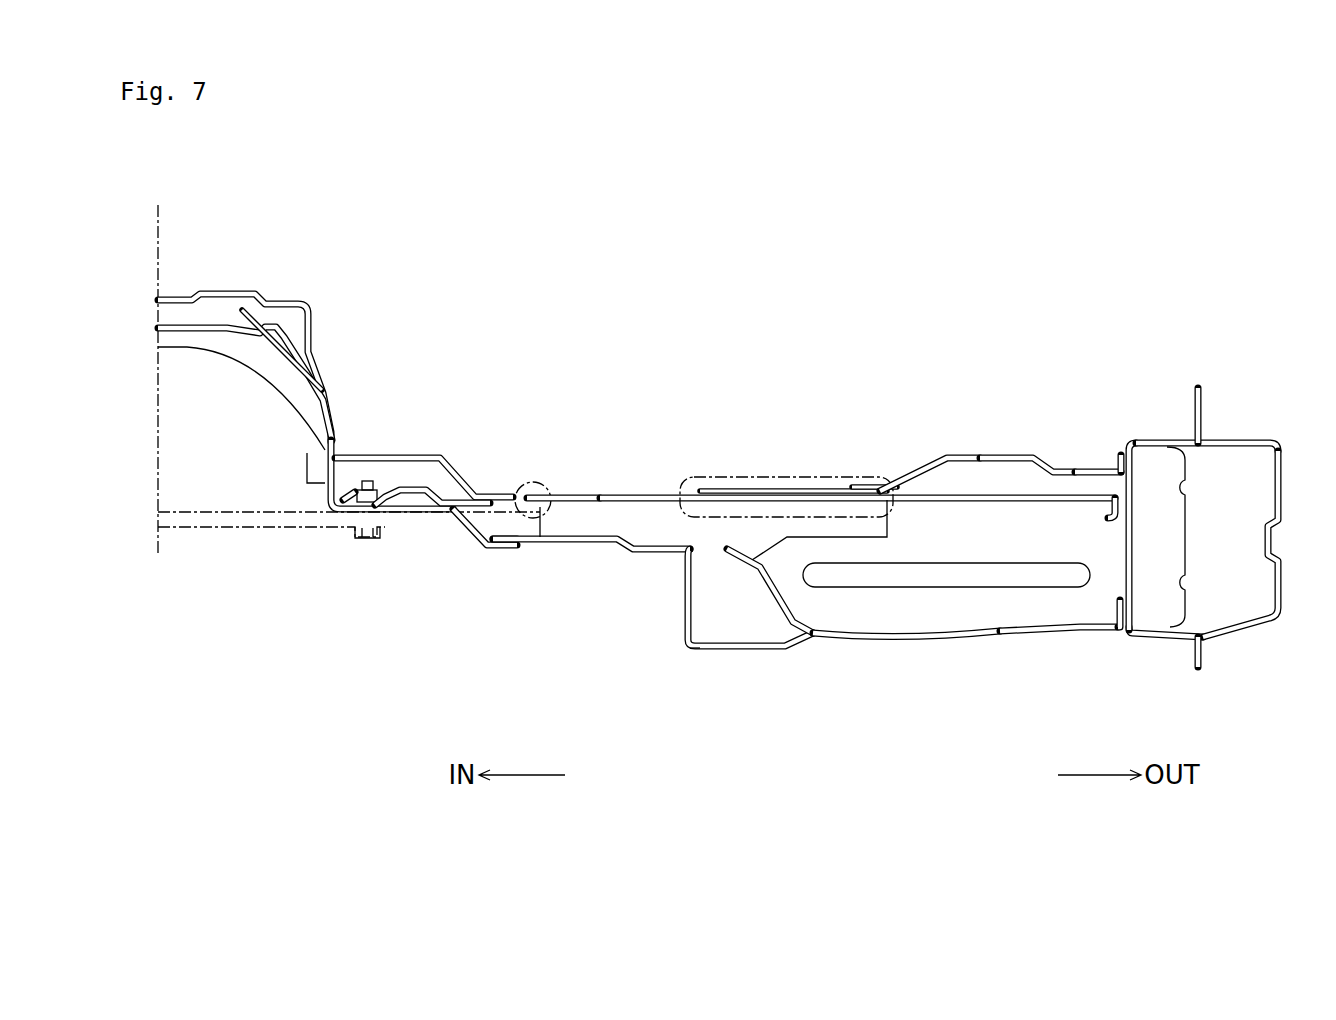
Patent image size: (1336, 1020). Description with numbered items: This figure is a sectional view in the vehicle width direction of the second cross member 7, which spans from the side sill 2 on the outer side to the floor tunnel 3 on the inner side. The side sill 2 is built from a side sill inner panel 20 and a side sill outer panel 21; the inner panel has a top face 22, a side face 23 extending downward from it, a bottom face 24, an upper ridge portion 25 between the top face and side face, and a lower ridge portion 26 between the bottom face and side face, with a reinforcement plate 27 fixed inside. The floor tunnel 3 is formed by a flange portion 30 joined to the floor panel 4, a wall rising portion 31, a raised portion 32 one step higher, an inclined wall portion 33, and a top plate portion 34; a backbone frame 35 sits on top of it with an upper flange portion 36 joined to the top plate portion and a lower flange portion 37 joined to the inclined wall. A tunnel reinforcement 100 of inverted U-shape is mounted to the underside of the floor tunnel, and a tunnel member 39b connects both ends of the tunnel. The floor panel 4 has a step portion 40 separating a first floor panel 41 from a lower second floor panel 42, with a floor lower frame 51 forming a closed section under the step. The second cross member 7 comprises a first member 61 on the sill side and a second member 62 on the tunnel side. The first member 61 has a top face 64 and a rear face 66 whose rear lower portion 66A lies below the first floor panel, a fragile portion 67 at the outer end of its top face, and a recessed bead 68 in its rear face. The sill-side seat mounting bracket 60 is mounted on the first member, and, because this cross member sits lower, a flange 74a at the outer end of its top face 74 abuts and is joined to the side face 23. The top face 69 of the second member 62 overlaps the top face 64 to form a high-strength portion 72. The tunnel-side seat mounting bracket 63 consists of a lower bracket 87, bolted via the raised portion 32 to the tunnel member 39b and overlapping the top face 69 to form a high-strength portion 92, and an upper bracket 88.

The side sill 2 is at (1170, 497).
The floor tunnel 3 is at (349, 447).
The floor panel 4 is at (831, 673).
The second cross member 7 is at (728, 412).
The side sill inner panel 20 is at (1178, 440).
The side sill outer panel 21 is at (1240, 440).
The top face 22 is at (1178, 455).
The side face 23 is at (1112, 590).
The bottom face 24 is at (1185, 620).
The upper ridge portion 25 is at (1130, 445).
The lower ridge portion 26 is at (1127, 620).
The reinforcement plate 27 is at (1192, 565).
The flange portion 30 is at (504, 593).
The wall rising portion 31 is at (457, 515).
The raised portion 32 is at (395, 517).
The inclined wall portion 33 is at (313, 420).
The top plate portion 34 is at (193, 347).
The backbone frame 35 is at (305, 310).
The upper flange portion 36 is at (213, 290).
The lower flange portion 37 is at (318, 378).
The tunnel member 39b is at (237, 531).
The step portion 40 is at (767, 600).
The first floor panel 41 is at (707, 557).
The second floor panel 42 is at (873, 637).
The floor lower frame 51 is at (681, 687).
The sill-side seat mounting bracket 60 is at (992, 444).
The first member 61 is at (786, 479).
The second member 62 is at (611, 482).
The tunnel-side seat mounting bracket 63 is at (424, 407).
The top face 64 is at (830, 485).
The rear face 66 is at (957, 513).
The rear lower portion 66A is at (1000, 615).
The fragile portion 67 is at (1086, 442).
The recessed bead 68 is at (940, 578).
The top face 69 is at (582, 490).
The high-strength portion 72 is at (700, 478).
The joint flange 74 is at (1075, 463).
The flange 74a is at (1107, 475).
The lower bracket 87 is at (498, 488).
The upper bracket 88 is at (415, 455).
The high-strength portion 92 is at (537, 482).
The tunnel reinforcement 100 is at (250, 368).